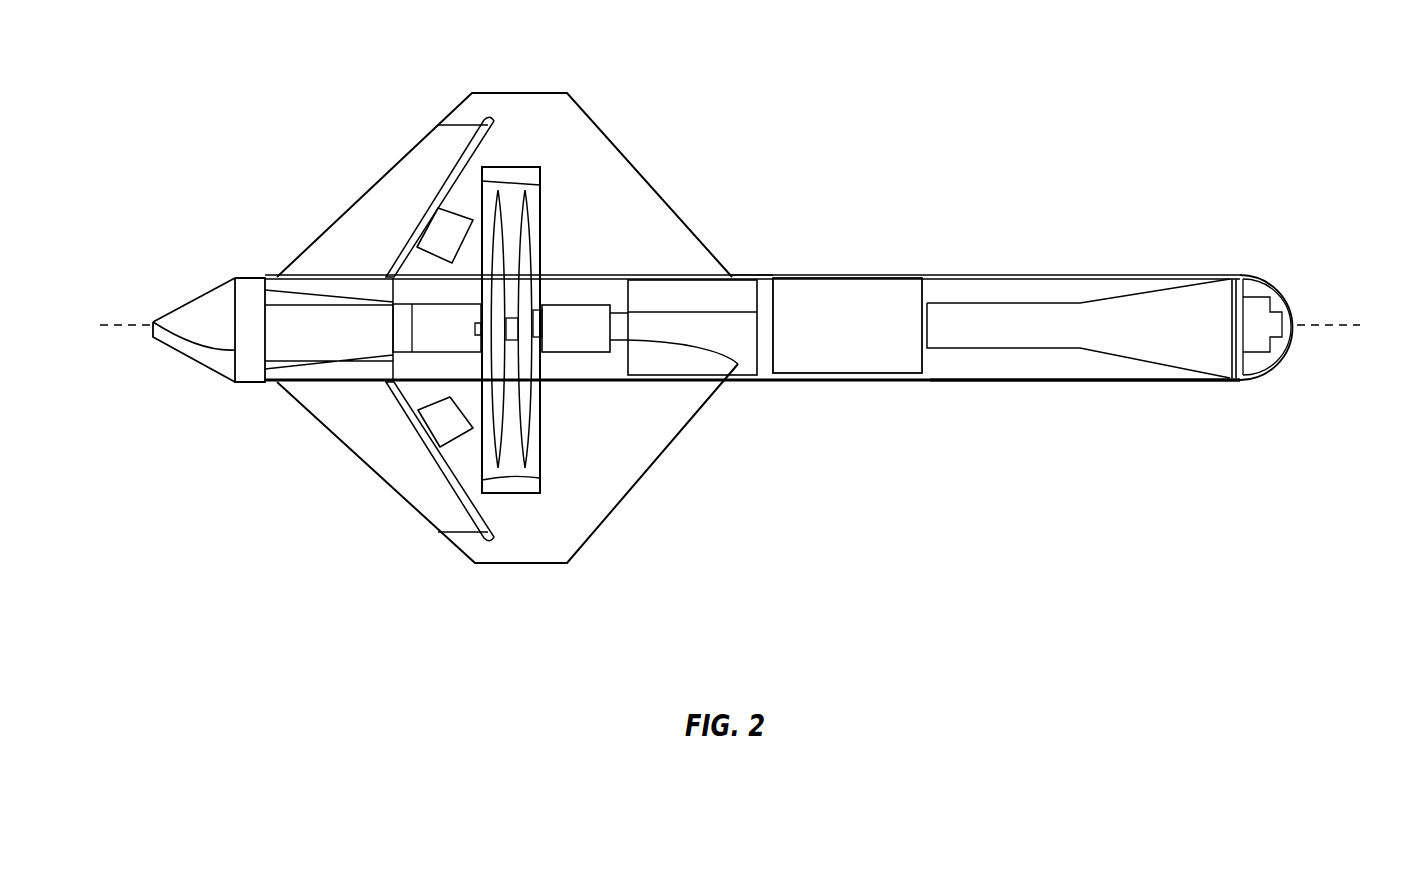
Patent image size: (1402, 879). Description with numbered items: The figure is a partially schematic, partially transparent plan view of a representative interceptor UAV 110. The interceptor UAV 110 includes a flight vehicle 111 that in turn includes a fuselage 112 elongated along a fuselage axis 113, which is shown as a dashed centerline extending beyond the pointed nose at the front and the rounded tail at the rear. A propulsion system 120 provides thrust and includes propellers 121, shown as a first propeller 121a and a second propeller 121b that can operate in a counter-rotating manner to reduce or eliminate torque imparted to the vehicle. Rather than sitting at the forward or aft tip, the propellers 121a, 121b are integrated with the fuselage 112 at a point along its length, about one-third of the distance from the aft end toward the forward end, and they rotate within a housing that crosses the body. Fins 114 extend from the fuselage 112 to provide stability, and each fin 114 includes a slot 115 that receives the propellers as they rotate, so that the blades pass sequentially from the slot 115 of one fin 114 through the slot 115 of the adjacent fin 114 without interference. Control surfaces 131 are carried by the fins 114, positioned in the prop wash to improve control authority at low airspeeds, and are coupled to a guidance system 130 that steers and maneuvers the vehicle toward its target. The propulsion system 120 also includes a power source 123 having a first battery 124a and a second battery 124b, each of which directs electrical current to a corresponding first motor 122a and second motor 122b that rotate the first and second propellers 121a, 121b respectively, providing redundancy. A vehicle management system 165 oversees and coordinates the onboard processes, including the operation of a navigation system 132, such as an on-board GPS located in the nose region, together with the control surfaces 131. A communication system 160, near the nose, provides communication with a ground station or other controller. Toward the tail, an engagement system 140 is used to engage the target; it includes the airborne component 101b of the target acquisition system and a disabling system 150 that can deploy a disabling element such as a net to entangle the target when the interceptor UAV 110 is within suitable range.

The interceptor UAV 110 is at (1025, 172).
The flight vehicle 111 is at (675, 152).
The fuselage 112 is at (1065, 383).
The fuselage axis 113 is at (142, 325).
The fins 114 is at (607, 135).
The slot 115 is at (488, 180).
The propulsion system 120 is at (497, 510).
The propellers 121 is at (598, 330).
The first propeller 121a is at (490, 452).
The second propeller 121b is at (519, 188).
The first motor 122a is at (410, 298).
The second motor 122b is at (595, 298).
The power source 123 is at (400, 240).
The first battery 124a is at (298, 278).
The second battery 124b is at (730, 290).
The guidance system 130 is at (858, 290).
The control surfaces 131 is at (452, 210).
The navigation system 132 is at (192, 297).
The engagement system 140 is at (1063, 295).
The disabling system 150 is at (1157, 284).
The communication system 160 is at (185, 347).
The vehicle management system 165 is at (845, 215).
The airborne component of the target acquisition system 101b is at (1257, 370).